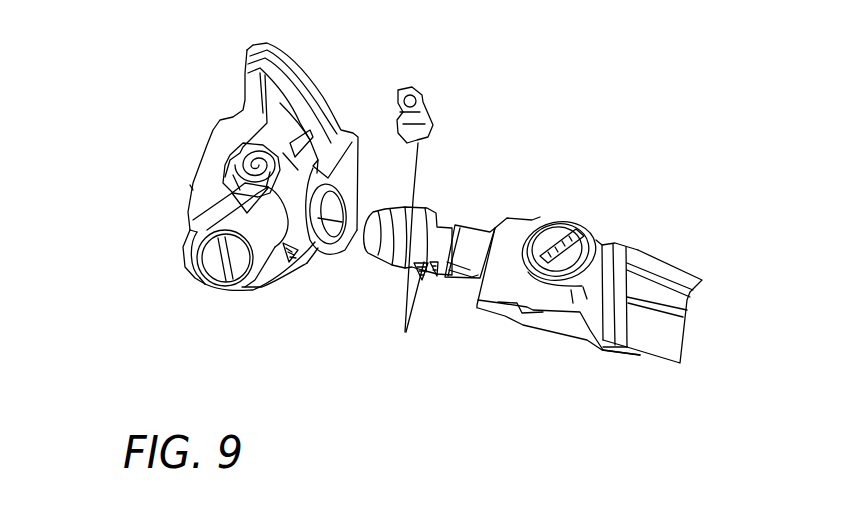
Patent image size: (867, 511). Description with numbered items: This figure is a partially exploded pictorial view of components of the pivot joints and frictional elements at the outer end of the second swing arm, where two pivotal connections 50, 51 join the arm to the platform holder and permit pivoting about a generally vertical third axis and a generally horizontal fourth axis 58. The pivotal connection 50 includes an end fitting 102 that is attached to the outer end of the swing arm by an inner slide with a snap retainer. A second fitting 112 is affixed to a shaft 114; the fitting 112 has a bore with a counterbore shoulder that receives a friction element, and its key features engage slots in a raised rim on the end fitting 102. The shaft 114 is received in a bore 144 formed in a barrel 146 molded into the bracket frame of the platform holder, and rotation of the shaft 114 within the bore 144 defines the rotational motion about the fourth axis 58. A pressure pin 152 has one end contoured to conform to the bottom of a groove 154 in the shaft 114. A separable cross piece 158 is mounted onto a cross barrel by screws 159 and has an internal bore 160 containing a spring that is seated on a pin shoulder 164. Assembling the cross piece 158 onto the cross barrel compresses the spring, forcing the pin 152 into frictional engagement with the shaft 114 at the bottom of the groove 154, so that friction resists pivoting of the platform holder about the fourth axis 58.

The pivotal connection 50 is at (560, 213).
The pivotal connection 51 is at (257, 292).
The fourth axis 58 is at (190, 185).
The end fitting 102 is at (553, 330).
The second fitting 112 is at (503, 218).
The shaft 114 is at (455, 283).
The bore 144 is at (345, 228).
The barrel 146 is at (207, 148).
The pressure pin 152 is at (400, 102).
The groove 154 is at (440, 225).
The separable cross piece 158 is at (190, 225).
The screws 159 is at (243, 157).
The internal bore 160 is at (203, 271).
The pin shoulder 164 is at (422, 103).